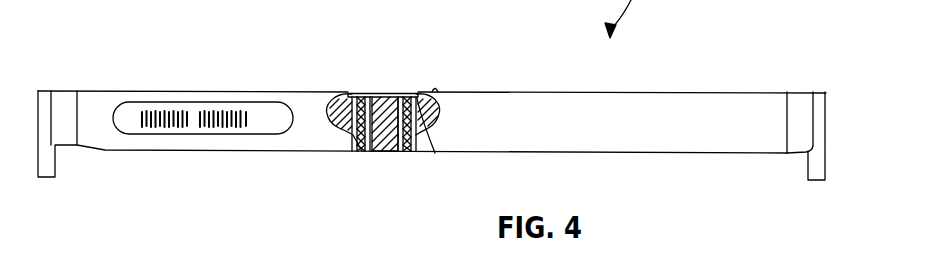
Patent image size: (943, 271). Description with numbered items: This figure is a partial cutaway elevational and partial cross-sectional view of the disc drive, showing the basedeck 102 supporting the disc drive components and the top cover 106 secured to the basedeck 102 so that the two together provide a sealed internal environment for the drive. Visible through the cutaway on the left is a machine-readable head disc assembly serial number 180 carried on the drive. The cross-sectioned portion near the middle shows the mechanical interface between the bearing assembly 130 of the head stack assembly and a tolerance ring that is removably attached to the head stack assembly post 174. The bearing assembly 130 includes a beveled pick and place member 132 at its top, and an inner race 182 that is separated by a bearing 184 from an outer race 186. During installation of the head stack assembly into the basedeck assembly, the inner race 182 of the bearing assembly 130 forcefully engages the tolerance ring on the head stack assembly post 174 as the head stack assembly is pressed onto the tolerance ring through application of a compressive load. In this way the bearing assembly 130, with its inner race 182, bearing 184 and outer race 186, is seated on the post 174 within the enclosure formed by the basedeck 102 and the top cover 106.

The basedeck 102 is at (733, 137).
The top cover 106 is at (722, 93).
The bearing assembly 130 is at (413, 113).
The beveled pick and place member 132 is at (382, 93).
The head stack assembly post 174 is at (370, 152).
The machine-readable head disc assembly serial number 180 is at (268, 118).
The inner race 182 is at (400, 152).
The bearing 184 is at (422, 132).
The outer race 186 is at (420, 97).